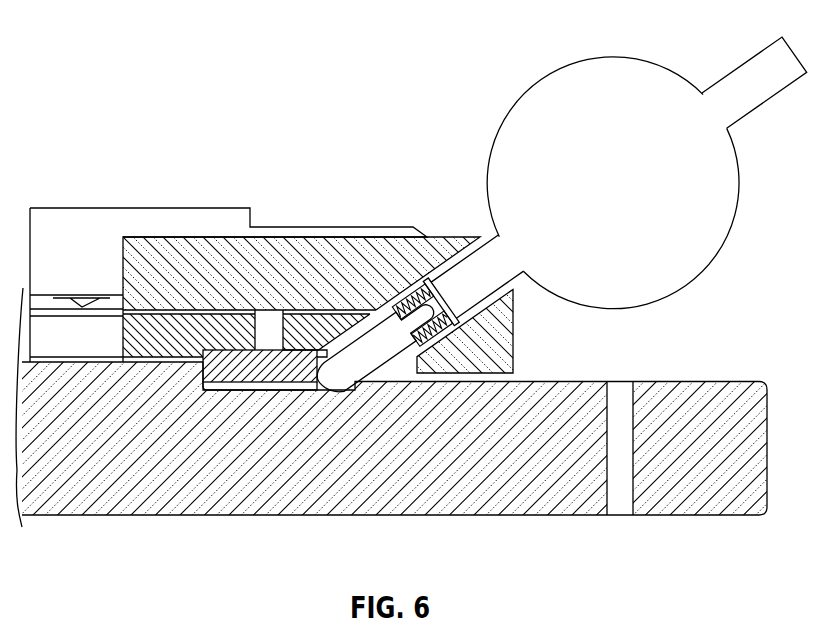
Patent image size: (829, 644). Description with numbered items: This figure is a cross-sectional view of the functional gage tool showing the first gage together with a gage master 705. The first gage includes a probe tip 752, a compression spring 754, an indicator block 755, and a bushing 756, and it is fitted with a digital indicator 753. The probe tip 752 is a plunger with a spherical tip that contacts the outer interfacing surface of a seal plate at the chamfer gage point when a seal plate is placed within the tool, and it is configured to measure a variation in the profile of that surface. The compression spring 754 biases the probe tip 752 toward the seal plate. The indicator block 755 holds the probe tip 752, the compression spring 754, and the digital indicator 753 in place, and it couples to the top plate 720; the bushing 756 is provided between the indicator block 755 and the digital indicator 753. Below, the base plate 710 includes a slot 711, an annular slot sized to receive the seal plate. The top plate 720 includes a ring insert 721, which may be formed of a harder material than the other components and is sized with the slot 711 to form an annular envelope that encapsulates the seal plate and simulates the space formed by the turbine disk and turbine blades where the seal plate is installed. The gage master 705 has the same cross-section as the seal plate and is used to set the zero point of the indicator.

The gage master 705 is at (222, 395).
The base plate 710 is at (503, 503).
The slot 711 is at (270, 387).
The top plate 720 is at (160, 313).
The ring insert 721 is at (295, 372).
The probe tip 752 is at (350, 345).
The digital indicator 753 is at (712, 247).
The compression spring 754 is at (405, 287).
The indicator block 755 is at (210, 249).
The bushing 756 is at (453, 250).